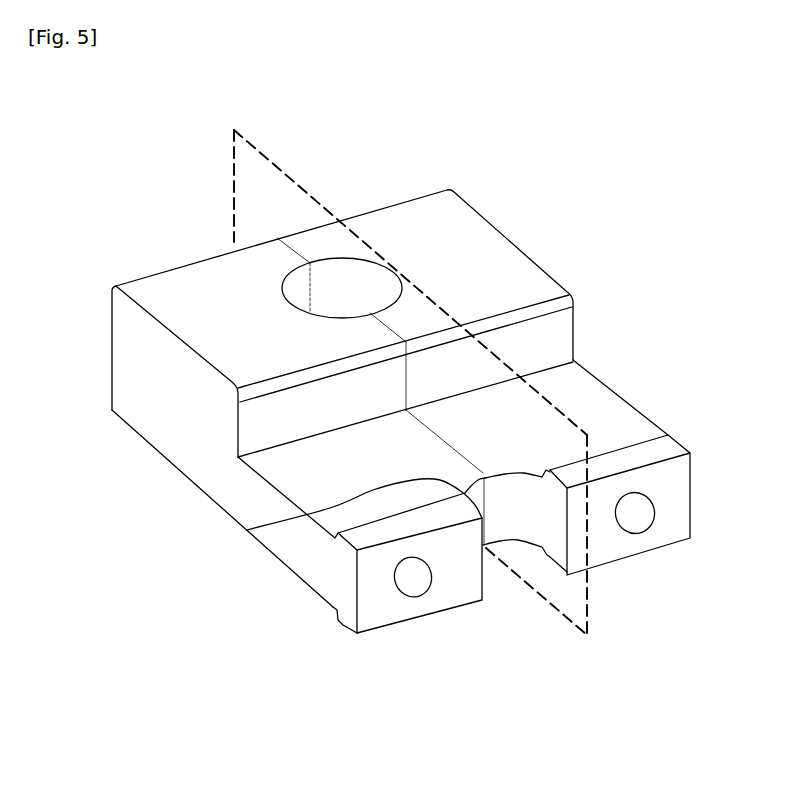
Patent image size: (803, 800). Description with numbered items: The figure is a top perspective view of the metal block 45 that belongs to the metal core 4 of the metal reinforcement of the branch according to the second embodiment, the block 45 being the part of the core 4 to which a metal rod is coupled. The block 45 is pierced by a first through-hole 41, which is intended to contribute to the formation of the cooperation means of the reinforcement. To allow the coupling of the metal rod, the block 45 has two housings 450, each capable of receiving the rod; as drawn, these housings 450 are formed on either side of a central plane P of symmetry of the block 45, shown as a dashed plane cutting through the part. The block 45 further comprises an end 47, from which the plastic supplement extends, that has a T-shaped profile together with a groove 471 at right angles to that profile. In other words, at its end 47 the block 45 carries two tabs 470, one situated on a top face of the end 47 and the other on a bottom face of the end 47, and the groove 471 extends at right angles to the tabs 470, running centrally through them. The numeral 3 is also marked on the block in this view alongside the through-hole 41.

The holder body 3 is at (411, 447).
The first through-hole 41 is at (397, 272).
The metal core 4 is at (411, 532).
The metal block 45 is at (411, 532).
The end 47 is at (401, 496).
The groove 471 is at (347, 505).
The tabs 470 is at (343, 548).
The housings 450 is at (415, 594).
The central plane of symmetry P is at (592, 583).